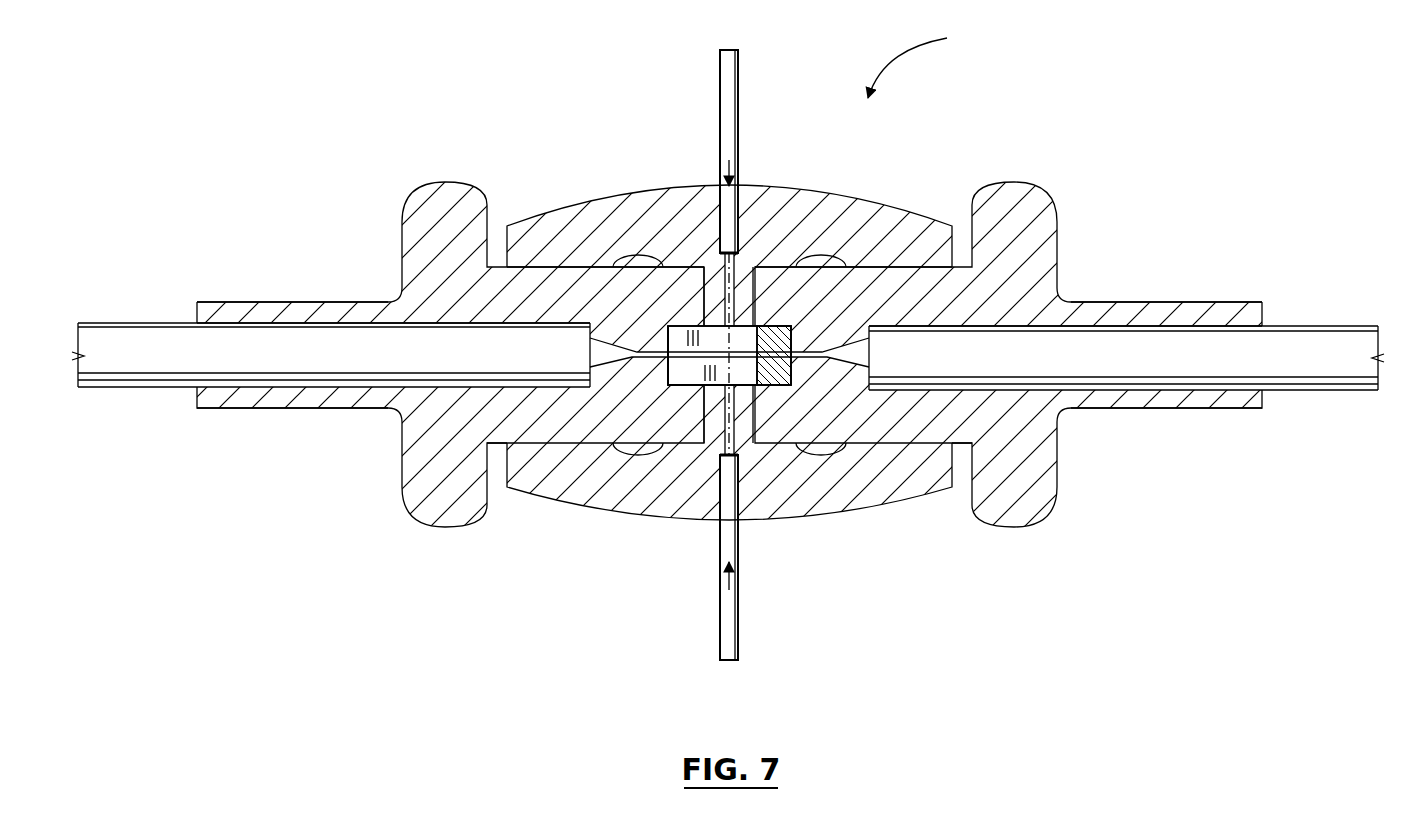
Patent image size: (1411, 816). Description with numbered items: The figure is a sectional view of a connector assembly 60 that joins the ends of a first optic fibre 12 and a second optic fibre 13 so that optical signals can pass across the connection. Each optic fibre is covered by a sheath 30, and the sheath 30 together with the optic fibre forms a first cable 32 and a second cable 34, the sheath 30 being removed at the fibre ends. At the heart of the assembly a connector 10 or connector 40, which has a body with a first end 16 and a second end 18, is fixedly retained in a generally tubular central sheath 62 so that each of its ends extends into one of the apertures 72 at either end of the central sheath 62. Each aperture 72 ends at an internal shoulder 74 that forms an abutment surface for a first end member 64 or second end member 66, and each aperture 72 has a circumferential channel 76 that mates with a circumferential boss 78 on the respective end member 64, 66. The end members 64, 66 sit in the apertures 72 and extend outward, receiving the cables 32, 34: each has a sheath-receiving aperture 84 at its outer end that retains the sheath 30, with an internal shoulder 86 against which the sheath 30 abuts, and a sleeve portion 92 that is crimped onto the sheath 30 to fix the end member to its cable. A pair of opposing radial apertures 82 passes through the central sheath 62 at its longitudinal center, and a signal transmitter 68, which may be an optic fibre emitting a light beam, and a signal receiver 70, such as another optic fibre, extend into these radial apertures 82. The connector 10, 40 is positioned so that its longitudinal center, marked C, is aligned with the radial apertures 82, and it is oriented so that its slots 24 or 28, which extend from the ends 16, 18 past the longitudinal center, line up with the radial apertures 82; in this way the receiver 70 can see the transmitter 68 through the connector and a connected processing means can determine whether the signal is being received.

The connector assembly 60 is at (925, 58).
The first end member 64 is at (440, 182).
The second end member 66 is at (1010, 182).
The central sheath 62 is at (635, 215).
The circumferential boss 78 is at (592, 500).
The internal shoulder 86 is at (597, 338).
The circumferential channel 76 is at (578, 345).
The second optic fibre 13 is at (860, 345).
The first end 16 is at (700, 388).
The first optic fibre 12 is at (690, 300).
The second end 18 is at (770, 290).
The internal shoulder 74 is at (708, 446).
The connector 10 is at (712, 450).
The connector 40 is at (729, 355).
The slot 24 is at (670, 386).
The slot 28 is at (712, 355).
The longitudinal center C is at (724, 255).
The signal transmitter 68 is at (740, 72).
The signal receiver 70 is at (740, 648).
The radial apertures 82 is at (732, 178).
The sheath 30 is at (127, 393).
The first cable 32 is at (90, 312).
The second cable 34 is at (1340, 314).
The sheath-receiving aperture 84 is at (226, 352).
The sleeve portion 92 is at (240, 410).
The aperture 72 is at (520, 432).